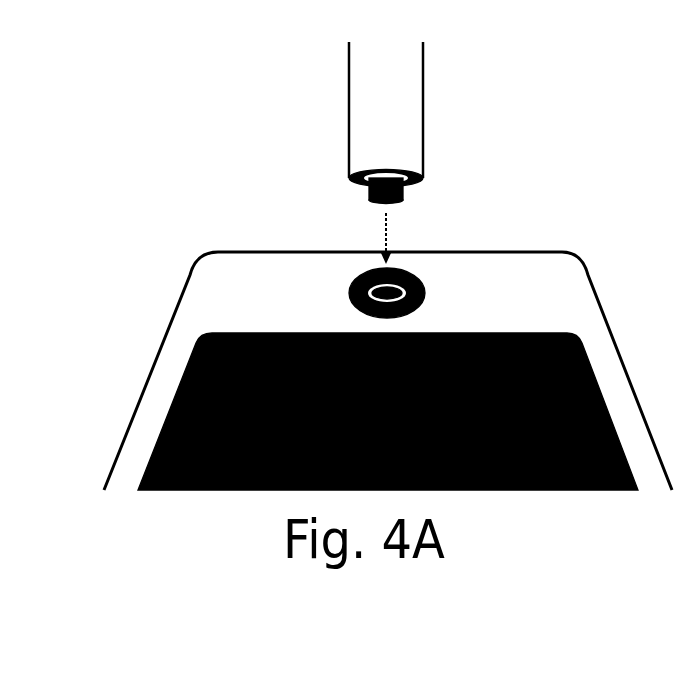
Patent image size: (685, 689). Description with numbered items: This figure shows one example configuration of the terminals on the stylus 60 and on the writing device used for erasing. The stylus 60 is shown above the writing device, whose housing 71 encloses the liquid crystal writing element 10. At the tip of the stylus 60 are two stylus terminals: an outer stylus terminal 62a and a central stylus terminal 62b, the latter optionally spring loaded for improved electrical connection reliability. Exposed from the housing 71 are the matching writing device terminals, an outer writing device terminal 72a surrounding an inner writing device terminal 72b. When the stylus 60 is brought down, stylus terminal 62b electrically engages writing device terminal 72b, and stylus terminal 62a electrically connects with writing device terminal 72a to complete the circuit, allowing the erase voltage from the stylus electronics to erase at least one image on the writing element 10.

The liquid crystal writing element 10 is at (156, 442).
The housing 71 is at (155, 378).
The stylus 60 is at (368, 73).
The stylus terminal 62a is at (350, 183).
The stylus terminal 62b is at (405, 201).
The writing device terminal 72a is at (350, 285).
The writing device terminal 72b is at (425, 283).